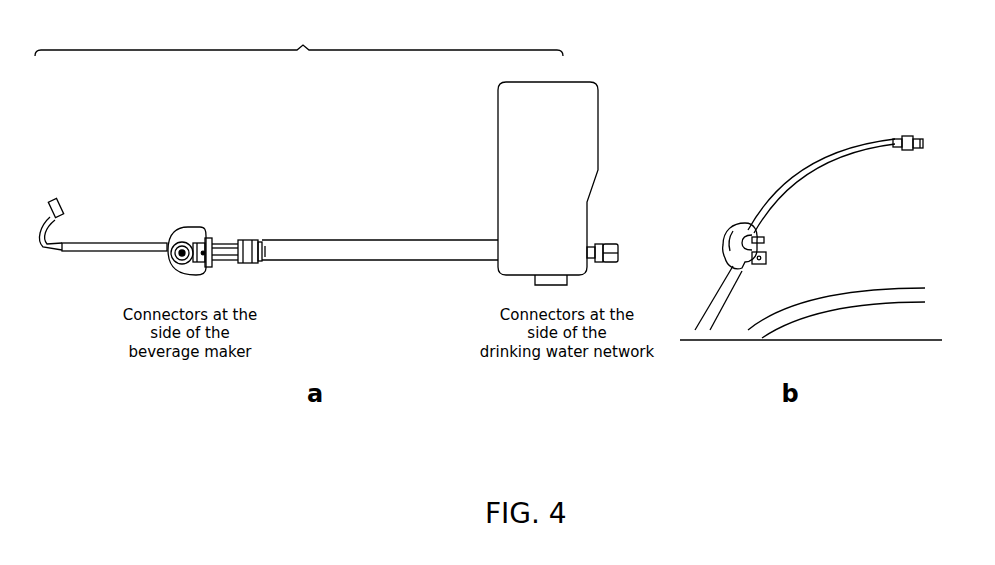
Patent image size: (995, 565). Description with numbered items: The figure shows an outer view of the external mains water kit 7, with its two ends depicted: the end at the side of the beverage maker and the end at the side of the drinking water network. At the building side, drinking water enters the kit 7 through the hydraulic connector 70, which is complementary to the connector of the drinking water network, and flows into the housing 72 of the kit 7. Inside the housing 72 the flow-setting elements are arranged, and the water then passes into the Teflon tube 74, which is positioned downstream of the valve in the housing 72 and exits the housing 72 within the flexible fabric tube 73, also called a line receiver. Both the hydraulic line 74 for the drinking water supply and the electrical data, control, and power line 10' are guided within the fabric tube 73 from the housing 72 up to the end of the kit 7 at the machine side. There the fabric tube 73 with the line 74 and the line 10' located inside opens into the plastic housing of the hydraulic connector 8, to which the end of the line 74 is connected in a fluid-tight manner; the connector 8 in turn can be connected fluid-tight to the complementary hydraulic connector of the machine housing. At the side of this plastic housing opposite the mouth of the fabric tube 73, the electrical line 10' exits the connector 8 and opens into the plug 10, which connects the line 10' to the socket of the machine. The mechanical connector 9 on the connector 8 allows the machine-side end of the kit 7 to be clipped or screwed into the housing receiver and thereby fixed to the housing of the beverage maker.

The mains water kit 7 is at (299, 41).
The hydraulic connector 8 is at (195, 225).
The mechanical connector 9 is at (205, 250).
The plug 10 is at (57, 193).
The data, control, and power line 10' is at (134, 238).
The hydraulic connector 70 is at (600, 246).
The housing 72 is at (598, 102).
The flexible fabric tube 73 is at (431, 240).
The Teflon tube 74 is at (236, 261).